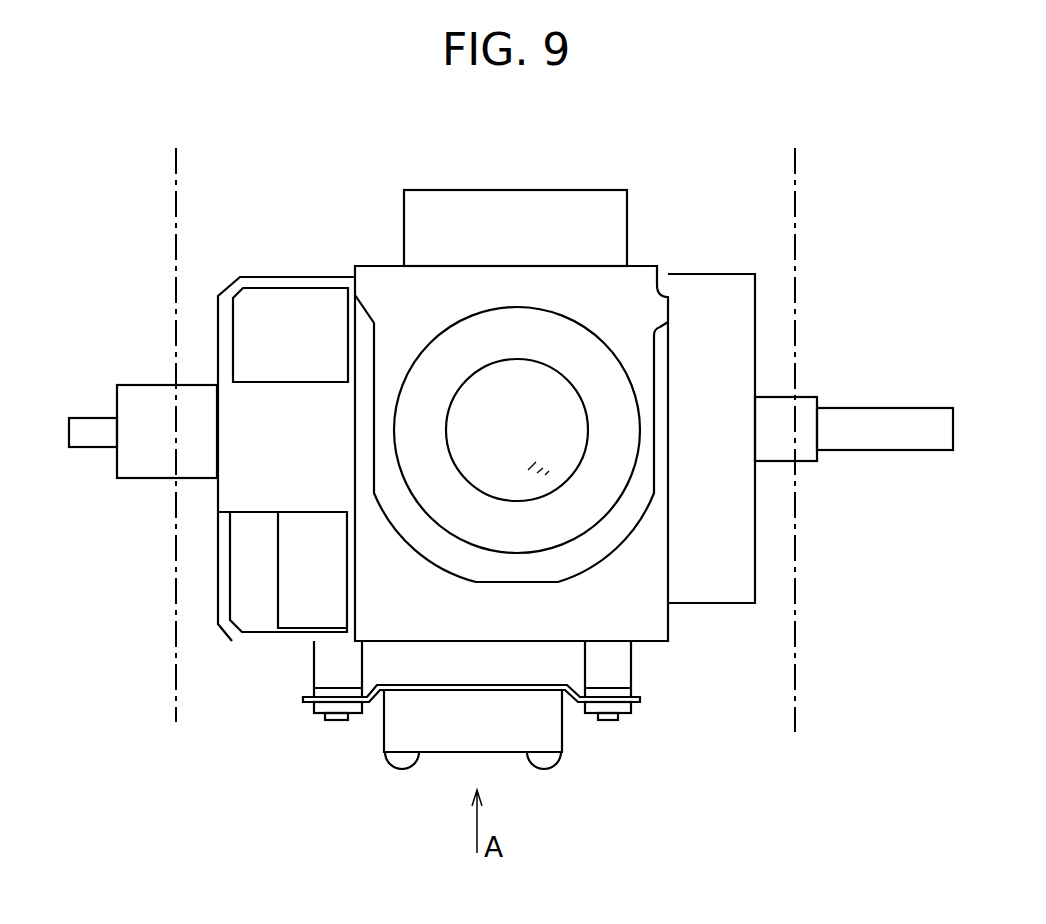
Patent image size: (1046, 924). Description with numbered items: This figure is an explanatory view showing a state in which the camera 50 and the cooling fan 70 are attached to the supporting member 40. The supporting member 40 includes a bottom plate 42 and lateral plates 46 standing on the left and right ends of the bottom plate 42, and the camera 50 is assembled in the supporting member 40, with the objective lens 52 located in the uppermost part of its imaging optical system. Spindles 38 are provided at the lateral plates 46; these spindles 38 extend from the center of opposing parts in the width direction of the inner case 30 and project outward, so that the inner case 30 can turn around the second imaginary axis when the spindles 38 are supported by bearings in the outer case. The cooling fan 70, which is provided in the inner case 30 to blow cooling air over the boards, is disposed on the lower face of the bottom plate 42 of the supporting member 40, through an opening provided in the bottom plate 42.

The inner case 30 is at (176, 683).
The spindles 38 is at (90, 417).
The supporting member 40 is at (384, 262).
The bottom plate 42 is at (290, 643).
The lateral plates 46 is at (217, 612).
The camera 50 is at (590, 322).
The objective lens 52 is at (562, 403).
The cooling fan 70 is at (383, 728).